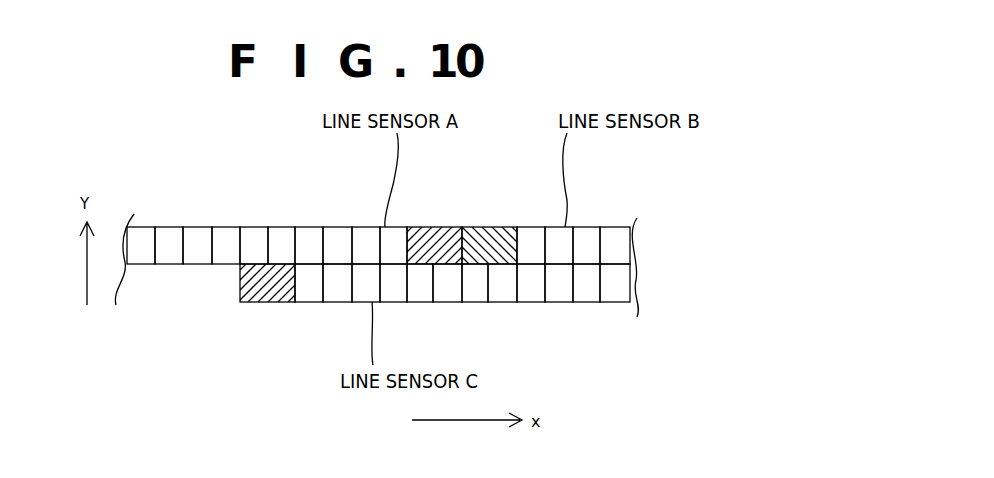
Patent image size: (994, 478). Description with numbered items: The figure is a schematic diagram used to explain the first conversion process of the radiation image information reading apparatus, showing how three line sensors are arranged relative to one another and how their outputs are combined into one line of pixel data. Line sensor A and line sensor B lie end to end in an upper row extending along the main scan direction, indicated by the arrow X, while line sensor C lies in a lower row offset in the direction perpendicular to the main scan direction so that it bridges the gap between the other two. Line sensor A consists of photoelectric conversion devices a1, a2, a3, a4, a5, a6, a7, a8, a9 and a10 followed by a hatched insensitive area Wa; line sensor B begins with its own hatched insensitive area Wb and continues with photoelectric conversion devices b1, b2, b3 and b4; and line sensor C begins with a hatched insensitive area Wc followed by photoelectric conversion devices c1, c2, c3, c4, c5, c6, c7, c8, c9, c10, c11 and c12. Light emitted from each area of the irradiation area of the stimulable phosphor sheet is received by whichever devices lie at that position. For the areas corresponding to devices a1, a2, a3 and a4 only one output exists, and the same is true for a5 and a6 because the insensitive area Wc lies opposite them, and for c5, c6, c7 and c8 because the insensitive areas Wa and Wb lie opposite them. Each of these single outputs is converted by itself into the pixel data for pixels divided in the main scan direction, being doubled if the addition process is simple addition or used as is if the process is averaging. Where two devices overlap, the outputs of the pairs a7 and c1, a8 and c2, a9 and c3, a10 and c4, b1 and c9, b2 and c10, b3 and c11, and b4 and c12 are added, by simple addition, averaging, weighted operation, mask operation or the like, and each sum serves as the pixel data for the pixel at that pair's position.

The photoelectric conversion device a1 is at (142, 227).
The photoelectric conversion device a2 is at (172, 227).
The photoelectric conversion device a3 is at (200, 227).
The photoelectric conversion device a4 is at (227, 227).
The photoelectric conversion device a5 is at (257, 227).
The photoelectric conversion device a6 is at (282, 227).
The photoelectric conversion device a7 is at (308, 227).
The photoelectric conversion device a8 is at (333, 227).
The photoelectric conversion device a9 is at (365, 227).
The photoelectric conversion device a10 is at (393, 227).
The insensitive area Wa is at (447, 227).
The insensitive area Wb is at (485, 227).
The insensitive area Wc is at (250, 302).
The photoelectric conversion device b1 is at (530, 227).
The photoelectric conversion device b2 is at (560, 227).
The photoelectric conversion device b3 is at (585, 227).
The photoelectric conversion device b4 is at (615, 227).
The photoelectric conversion device c1 is at (310, 302).
The photoelectric conversion device c2 is at (342, 302).
The photoelectric conversion device c3 is at (367, 302).
The photoelectric conversion device c4 is at (393, 302).
The photoelectric conversion device c5 is at (418, 302).
The photoelectric conversion device c6 is at (447, 302).
The photoelectric conversion device c7 is at (478, 302).
The photoelectric conversion device c8 is at (505, 302).
The photoelectric conversion device c9 is at (533, 302).
The photoelectric conversion device c10 is at (563, 302).
The photoelectric conversion device c11 is at (593, 302).
The photoelectric conversion device c12 is at (617, 302).